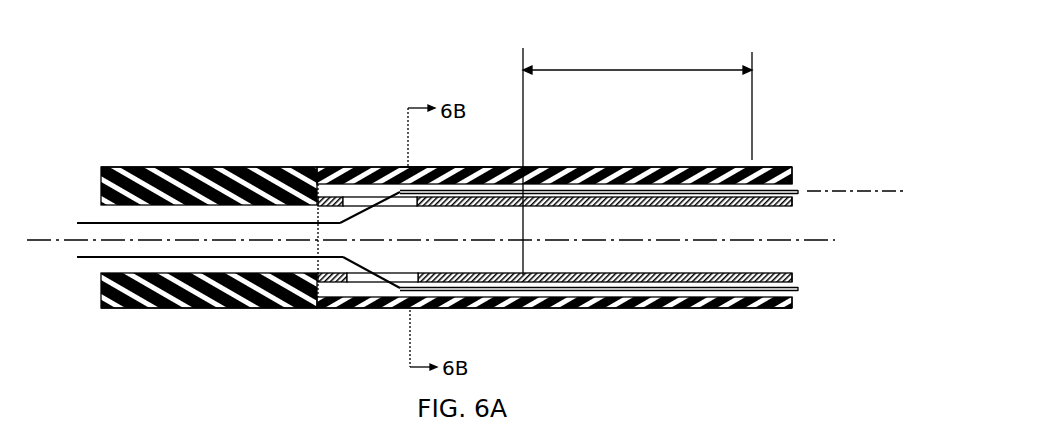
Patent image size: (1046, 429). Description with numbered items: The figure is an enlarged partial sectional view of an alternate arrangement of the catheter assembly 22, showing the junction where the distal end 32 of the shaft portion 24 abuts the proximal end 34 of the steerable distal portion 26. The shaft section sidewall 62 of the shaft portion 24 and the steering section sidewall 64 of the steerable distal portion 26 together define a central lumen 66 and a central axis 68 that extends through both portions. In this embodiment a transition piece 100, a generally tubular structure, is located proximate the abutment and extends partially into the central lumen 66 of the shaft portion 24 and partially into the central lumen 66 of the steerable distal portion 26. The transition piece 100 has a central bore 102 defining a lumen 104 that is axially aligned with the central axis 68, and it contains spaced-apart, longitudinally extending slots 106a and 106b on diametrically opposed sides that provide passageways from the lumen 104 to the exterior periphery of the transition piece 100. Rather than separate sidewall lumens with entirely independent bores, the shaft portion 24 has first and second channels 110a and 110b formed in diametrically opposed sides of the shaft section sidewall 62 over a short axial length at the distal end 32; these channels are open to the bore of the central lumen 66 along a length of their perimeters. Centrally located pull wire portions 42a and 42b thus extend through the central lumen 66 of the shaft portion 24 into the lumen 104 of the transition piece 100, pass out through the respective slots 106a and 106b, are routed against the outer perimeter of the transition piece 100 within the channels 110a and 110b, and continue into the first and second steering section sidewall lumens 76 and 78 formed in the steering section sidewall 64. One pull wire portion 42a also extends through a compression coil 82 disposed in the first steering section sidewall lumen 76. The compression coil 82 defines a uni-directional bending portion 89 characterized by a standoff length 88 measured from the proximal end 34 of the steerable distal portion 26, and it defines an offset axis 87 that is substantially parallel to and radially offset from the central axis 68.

The catheter assembly 22 is at (124, 75).
The shaft portion 24 is at (136, 167).
The steerable distal portion 26 is at (767, 170).
The distal end of the shaft portion 32 is at (448, 167).
The proximal end of the steerable distal portion 34 is at (512, 167).
The first pull wire portion 42a is at (266, 223).
The second pull wire portion 42b is at (333, 262).
The shaft section sidewall 62 is at (208, 167).
The steering section sidewall 64 is at (695, 172).
The central lumen 66 is at (702, 257).
The central axis 68 is at (37, 238).
The first steering section sidewall lumen 76 is at (785, 180).
The second steering section sidewall lumen 78 is at (782, 312).
The compression coil 82 is at (628, 172).
The offset axis 87 is at (833, 195).
The standoff length 88 is at (637, 45).
The uni-directional bending portion 89 is at (637, 70).
The transition piece 100 is at (502, 289).
The central bore 102 is at (333, 232).
The lumen of the transition piece 104 is at (284, 258).
The first slot 106a is at (360, 203).
The second slot 106b is at (345, 282).
The first channel 110a is at (413, 197).
The second channel 110b is at (440, 283).